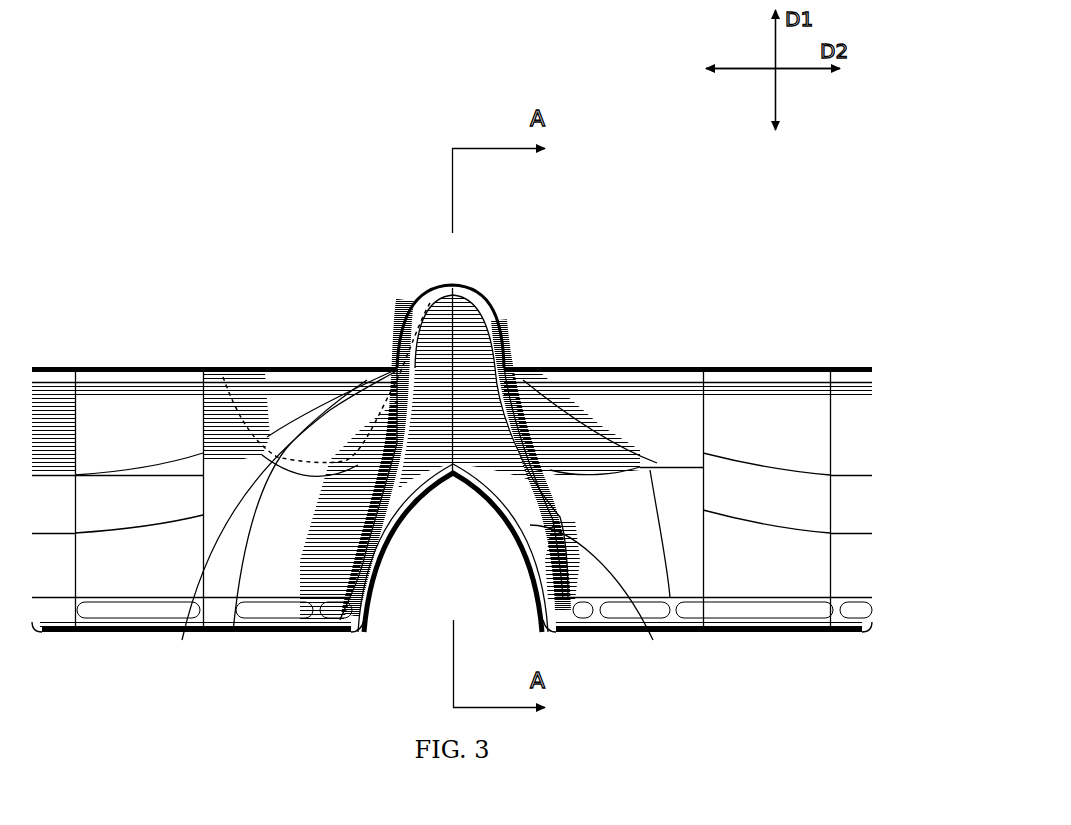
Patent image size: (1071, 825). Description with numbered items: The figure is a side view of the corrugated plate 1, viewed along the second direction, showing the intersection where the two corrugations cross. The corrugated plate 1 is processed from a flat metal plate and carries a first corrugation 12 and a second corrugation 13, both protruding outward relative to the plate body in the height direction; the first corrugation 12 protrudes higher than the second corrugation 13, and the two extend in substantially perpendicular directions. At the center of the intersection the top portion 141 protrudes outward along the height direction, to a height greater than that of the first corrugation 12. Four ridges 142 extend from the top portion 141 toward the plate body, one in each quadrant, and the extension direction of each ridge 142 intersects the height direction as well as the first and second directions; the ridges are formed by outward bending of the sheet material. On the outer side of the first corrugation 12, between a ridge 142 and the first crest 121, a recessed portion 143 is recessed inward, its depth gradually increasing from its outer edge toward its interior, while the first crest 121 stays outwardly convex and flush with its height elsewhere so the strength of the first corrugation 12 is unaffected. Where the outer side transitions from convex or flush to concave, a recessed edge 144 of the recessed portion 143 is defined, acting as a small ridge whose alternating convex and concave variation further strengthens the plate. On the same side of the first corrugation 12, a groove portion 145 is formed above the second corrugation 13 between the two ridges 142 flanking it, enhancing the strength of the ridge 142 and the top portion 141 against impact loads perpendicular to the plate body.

The corrugated plate 1 is at (173, 202).
The first corrugation 12 is at (140, 415).
The first crest 121 is at (276, 362).
The second corrugation 13 is at (653, 640).
The top portion 141 is at (457, 283).
The ridge 142 is at (400, 348).
The recessed portion 143 is at (291, 418).
The recessed edge 144 is at (185, 633).
The groove portion 145 is at (465, 378).